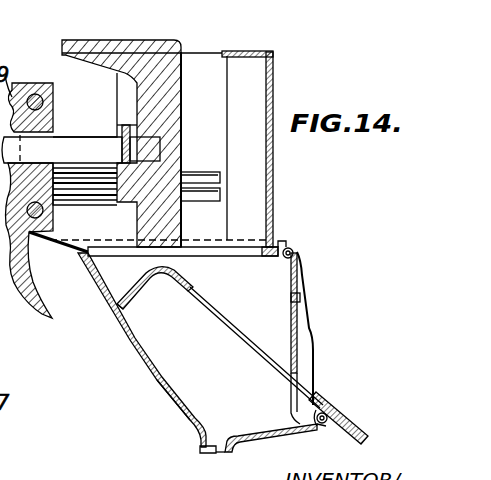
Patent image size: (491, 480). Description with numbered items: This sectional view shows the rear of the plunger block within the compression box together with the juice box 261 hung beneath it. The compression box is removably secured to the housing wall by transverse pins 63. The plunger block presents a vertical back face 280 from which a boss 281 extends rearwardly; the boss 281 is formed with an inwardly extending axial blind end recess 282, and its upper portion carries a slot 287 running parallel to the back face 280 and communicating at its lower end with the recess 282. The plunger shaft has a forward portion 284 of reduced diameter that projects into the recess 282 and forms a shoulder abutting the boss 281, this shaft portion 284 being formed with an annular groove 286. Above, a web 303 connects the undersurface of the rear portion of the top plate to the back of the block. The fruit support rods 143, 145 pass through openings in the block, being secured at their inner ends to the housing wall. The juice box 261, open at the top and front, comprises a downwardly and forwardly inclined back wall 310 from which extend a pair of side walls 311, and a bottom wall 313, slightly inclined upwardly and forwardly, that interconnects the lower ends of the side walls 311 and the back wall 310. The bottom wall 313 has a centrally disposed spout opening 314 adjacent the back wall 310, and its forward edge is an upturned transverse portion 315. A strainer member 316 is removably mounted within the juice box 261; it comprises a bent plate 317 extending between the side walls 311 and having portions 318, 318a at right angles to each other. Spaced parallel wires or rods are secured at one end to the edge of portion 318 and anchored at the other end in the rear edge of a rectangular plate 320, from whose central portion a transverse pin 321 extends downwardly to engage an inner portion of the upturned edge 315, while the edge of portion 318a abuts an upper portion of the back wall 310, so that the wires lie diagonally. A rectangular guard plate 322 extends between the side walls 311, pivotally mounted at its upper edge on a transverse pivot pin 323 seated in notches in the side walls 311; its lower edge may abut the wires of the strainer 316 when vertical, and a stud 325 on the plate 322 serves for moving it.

The back face 280 is at (129, 53).
The transverse pins 63 is at (54, 84).
The web 303 is at (85, 105).
The boss 281 is at (124, 126).
The slot 287 is at (122, 135).
The annular groove 286 is at (118, 148).
The axial blind end recess 282 is at (182, 117).
The forward portion of plunger shaft 284 is at (148, 149).
The fruit support rod 145 is at (220, 173).
The fruit support rod 143 is at (220, 191).
The transverse pivot pin 323 is at (294, 253).
The back wall 310 is at (143, 346).
The spout opening 314 is at (202, 445).
The juice box 261 is at (157, 391).
The portion of bent plate 318 is at (190, 286).
The bent plate 317 is at (133, 284).
The portion of bent plate 318a is at (167, 316).
The strainer member 316 is at (248, 351).
The side walls 311 is at (256, 400).
The guard plate 322 is at (301, 272).
The stud 325 is at (313, 316).
The rectangular plate 320 is at (345, 413).
The transverse pin 321 is at (316, 418).
The bottom wall 313 is at (250, 438).
The upturned transverse portion 315 is at (320, 426).